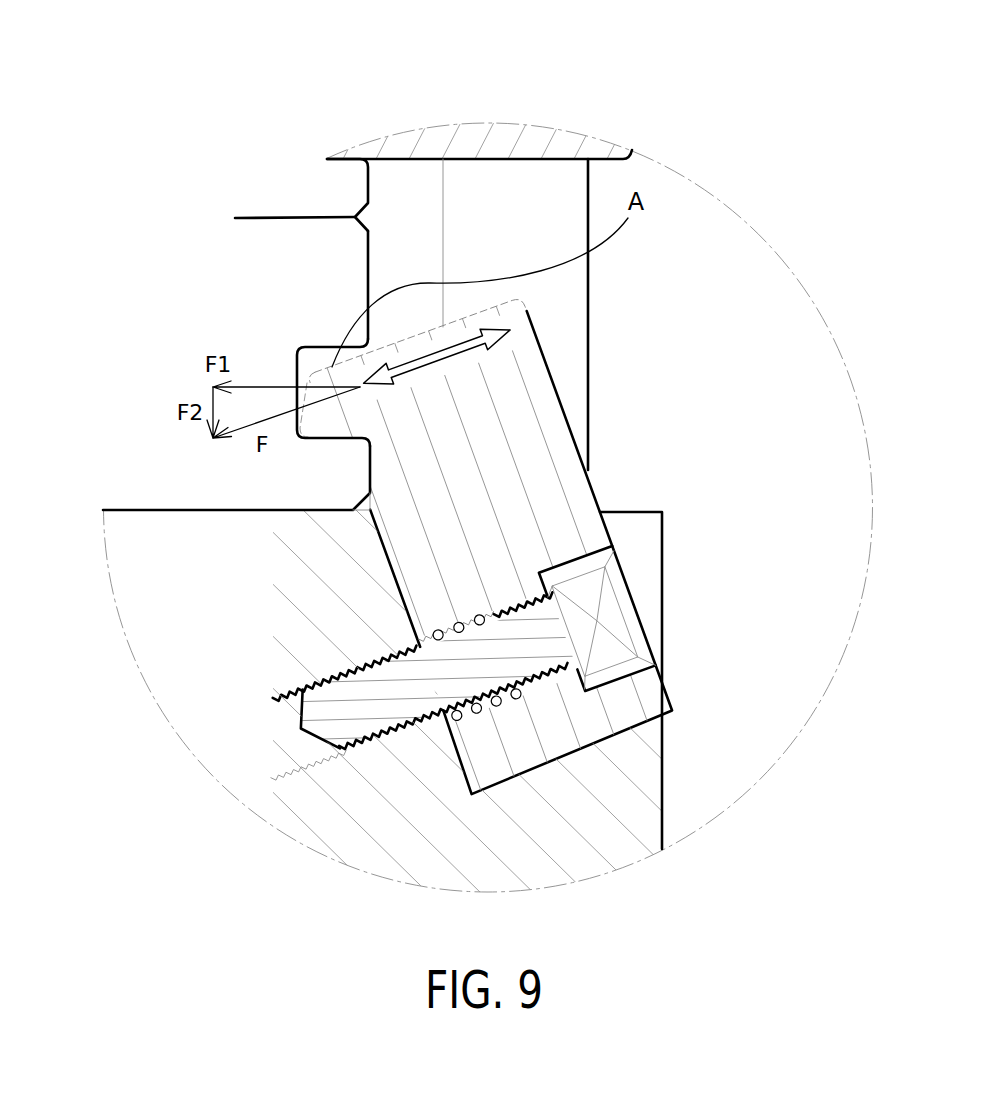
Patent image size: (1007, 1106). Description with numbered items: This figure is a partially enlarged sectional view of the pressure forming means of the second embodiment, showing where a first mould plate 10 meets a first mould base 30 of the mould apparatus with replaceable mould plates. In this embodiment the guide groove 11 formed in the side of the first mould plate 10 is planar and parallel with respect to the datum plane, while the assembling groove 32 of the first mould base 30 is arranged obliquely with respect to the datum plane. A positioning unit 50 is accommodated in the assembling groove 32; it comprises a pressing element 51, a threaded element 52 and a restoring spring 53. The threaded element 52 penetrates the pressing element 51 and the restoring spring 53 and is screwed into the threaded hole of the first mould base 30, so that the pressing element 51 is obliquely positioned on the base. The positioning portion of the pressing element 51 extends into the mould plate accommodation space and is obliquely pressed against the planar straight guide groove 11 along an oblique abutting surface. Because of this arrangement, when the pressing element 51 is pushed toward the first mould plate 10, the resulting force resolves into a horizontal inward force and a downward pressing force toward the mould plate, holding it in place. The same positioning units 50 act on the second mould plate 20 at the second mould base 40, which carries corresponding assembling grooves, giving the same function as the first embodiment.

The first mould plate 10 is at (145, 472).
The guide groove 11 is at (297, 365).
The second mould plate 20 is at (318, 198).
The first mould base 30 is at (675, 788).
The assembling groove 32 is at (650, 578).
The second mould base 40 is at (486, 136).
The positioning unit 50 is at (517, 675).
The pressing element 51 is at (635, 708).
The threaded element 52 is at (627, 658).
The restoring spring 53 is at (517, 697).